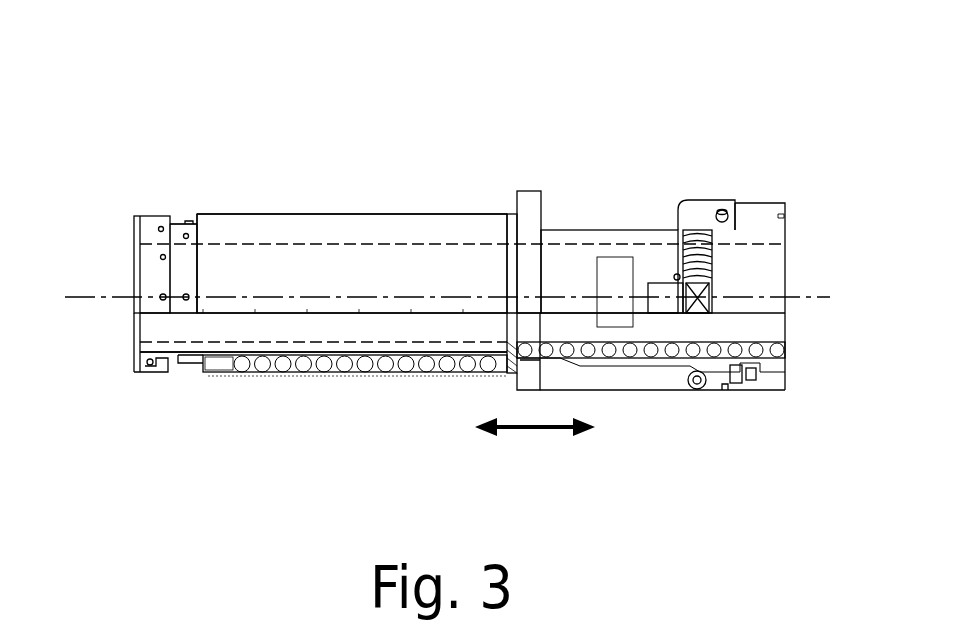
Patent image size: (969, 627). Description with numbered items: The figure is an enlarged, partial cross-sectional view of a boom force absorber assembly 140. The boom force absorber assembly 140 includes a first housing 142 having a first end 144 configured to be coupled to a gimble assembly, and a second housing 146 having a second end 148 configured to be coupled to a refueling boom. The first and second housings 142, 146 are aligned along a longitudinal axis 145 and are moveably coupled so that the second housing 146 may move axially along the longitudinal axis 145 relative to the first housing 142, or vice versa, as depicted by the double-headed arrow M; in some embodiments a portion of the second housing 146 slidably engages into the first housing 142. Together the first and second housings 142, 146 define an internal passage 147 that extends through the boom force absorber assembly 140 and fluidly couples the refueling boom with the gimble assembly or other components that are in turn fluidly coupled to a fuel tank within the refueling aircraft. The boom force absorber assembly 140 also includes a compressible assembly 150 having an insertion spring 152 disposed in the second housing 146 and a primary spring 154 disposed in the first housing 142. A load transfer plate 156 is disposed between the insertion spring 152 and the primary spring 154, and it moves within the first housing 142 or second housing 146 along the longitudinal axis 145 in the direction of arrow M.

The boom force absorber assembly 140 is at (232, 137).
The first housing 142 is at (355, 213).
The first end 144 is at (124, 192).
The longitudinal axis 145 is at (105, 297).
The second housing 146 is at (573, 230).
The internal passage 147 is at (445, 243).
The second end 148 is at (770, 166).
The compressible assembly 150 is at (349, 446).
The insertion spring 152 is at (640, 363).
The primary spring 154 is at (280, 373).
The load transfer plate 156 is at (510, 377).
The double-headed arrow M is at (537, 430).